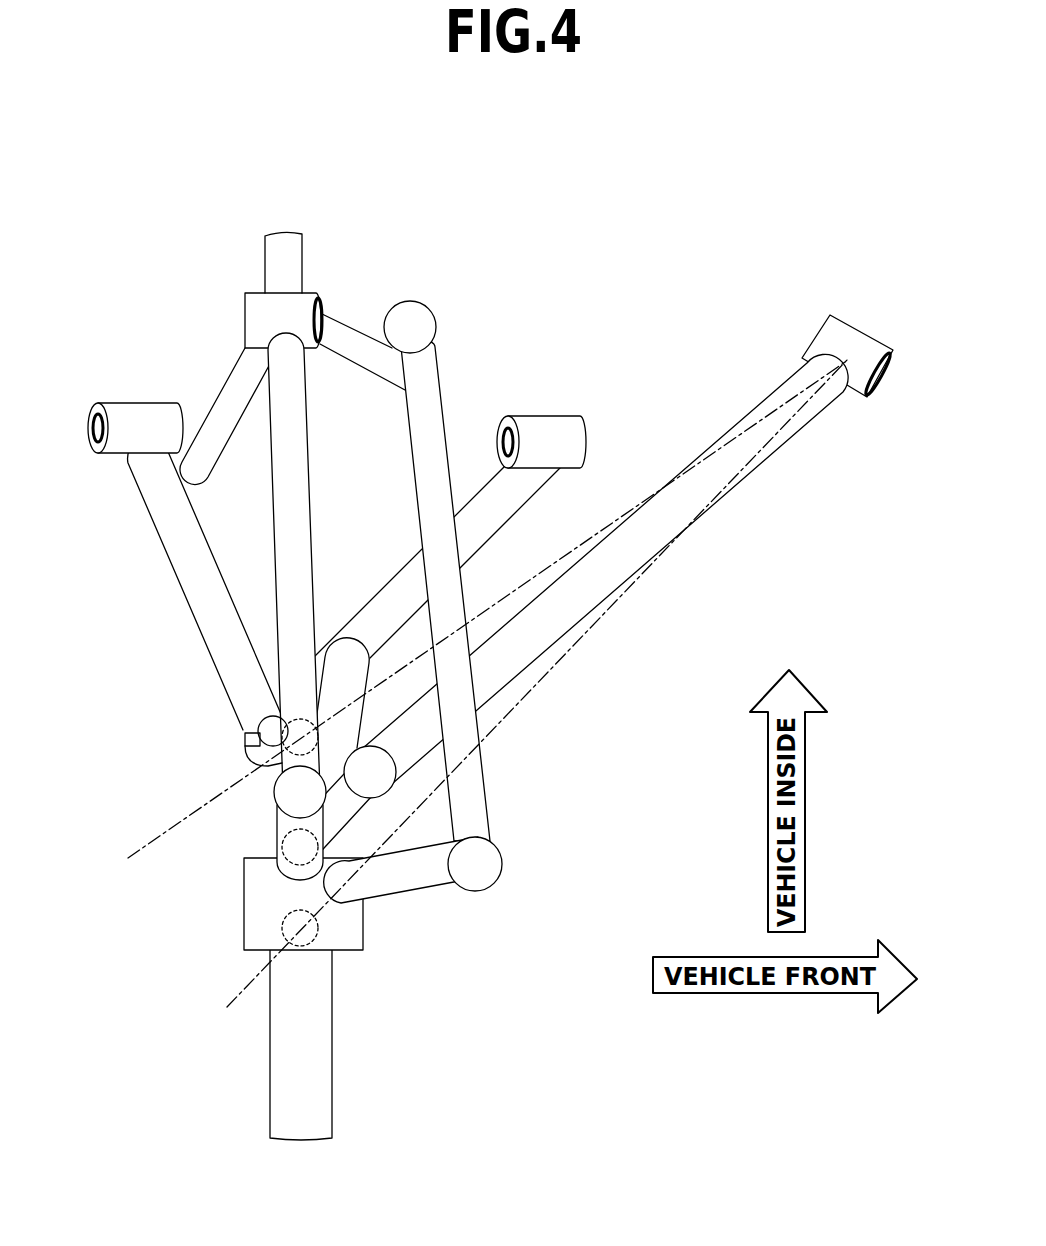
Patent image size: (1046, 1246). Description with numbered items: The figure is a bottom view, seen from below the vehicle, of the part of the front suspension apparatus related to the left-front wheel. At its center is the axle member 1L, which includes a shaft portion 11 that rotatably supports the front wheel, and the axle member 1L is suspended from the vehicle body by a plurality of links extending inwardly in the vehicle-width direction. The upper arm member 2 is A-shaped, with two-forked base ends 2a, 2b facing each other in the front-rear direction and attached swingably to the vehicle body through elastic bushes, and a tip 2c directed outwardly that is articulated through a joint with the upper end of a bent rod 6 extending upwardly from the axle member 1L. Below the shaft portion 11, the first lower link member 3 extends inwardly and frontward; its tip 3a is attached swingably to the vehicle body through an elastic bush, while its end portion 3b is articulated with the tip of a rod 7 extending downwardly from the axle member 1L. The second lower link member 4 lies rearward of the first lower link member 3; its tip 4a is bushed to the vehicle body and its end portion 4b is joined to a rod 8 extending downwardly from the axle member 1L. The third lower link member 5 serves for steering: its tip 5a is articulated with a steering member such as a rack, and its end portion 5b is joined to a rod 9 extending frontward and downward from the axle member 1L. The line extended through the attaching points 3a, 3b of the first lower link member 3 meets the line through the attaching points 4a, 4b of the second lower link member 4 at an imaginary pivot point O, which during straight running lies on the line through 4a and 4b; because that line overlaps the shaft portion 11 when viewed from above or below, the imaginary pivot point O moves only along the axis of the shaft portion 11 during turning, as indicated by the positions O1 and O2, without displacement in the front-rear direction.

The axle member 1L is at (344, 955).
The upper arm member 2 is at (165, 563).
The base end 2a is at (568, 416).
The base end 2b is at (104, 402).
The tip 2c is at (255, 758).
The first lower link member 3 is at (552, 658).
The tip 3a is at (852, 326).
The end portion 3b is at (398, 790).
The second lower link member 4 is at (322, 464).
The tip 4a is at (246, 305).
The end portion 4b is at (277, 795).
The third lower link member 5 is at (503, 766).
The tip 5a is at (432, 307).
The end portion 5b is at (503, 863).
The bent rod 6 is at (366, 640).
The rod 7 is at (368, 840).
The rod 8 is at (262, 840).
The rod 9 is at (436, 908).
The shaft portion 11 is at (333, 1092).
The imaginary pivot point O is at (283, 873).
The imaginary pivot point position O1 is at (277, 711).
The imaginary pivot point position O2 is at (290, 933).